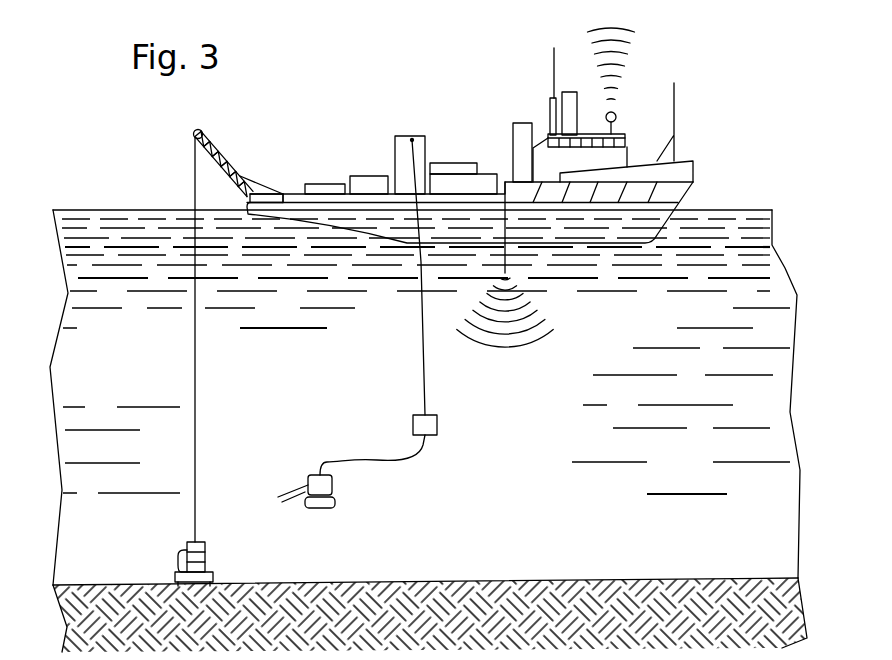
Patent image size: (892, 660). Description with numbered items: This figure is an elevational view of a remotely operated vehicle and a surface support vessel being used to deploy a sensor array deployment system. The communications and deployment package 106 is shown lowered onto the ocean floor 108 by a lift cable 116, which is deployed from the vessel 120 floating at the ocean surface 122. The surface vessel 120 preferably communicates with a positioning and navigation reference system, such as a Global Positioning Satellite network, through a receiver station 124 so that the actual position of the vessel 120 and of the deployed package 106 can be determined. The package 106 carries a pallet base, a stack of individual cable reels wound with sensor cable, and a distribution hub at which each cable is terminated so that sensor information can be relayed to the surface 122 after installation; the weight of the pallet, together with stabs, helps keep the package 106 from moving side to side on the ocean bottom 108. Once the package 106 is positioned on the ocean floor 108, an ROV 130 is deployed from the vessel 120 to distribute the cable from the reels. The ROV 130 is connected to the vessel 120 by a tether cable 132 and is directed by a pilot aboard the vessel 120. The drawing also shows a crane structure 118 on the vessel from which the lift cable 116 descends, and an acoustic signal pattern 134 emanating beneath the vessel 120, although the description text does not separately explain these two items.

The communications and deployment package 106 is at (160, 562).
The ocean floor 108 is at (615, 578).
The lift cable 116 is at (194, 357).
The crane 118 is at (228, 153).
The vessel 120 is at (440, 90).
The ocean surface 122 is at (718, 208).
The receiver station 124 is at (660, 59).
The ROV 130 is at (335, 487).
The tether cable 132 is at (375, 460).
The acoustic signal 134 is at (550, 289).